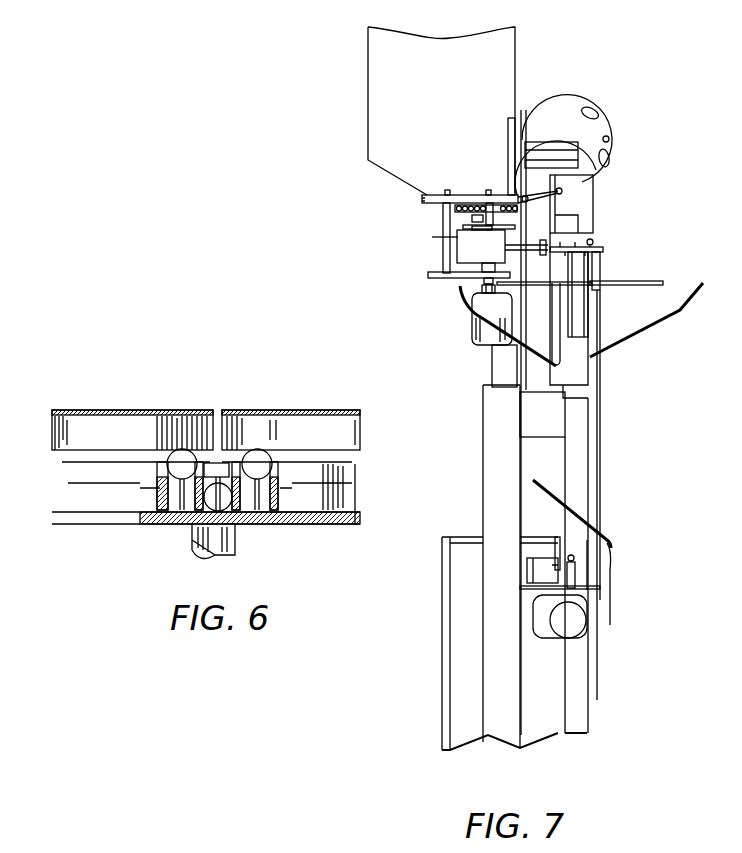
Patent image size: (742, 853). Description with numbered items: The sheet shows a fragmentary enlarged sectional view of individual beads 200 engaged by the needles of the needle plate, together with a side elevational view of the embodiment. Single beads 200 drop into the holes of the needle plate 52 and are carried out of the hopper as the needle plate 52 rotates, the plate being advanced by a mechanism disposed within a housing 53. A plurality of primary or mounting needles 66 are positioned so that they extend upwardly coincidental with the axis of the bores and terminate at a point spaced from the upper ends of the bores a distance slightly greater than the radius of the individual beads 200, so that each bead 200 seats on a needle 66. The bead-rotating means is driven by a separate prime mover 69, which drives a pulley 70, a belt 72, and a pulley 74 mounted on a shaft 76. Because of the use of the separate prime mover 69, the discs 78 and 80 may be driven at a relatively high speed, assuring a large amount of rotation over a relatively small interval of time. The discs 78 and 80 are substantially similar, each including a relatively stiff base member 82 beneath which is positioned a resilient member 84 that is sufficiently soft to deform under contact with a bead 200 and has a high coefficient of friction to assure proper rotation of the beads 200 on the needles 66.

In FIG. 7, the needle plate 52 is at (455, 219).
In FIG. 7, the housing 53 is at (462, 254).
In FIG. 6, the mounting needles 66 is at (177, 503).
In FIG. 7, the prime mover 69 is at (478, 340).
In FIG. 7, the pulley 70 is at (480, 280).
In FIG. 7, the belt 72 is at (447, 275).
In FIG. 7, the pulley 74 is at (427, 275).
In FIG. 7, the shaft 76 is at (446, 268).
In FIG. 7, the disc 78 is at (422, 200).
In FIG. 7, the disc 80 is at (472, 195).
In FIG. 6, the base member 82 is at (103, 411).
In FIG. 6, the resilient member 84 is at (120, 423).
In FIG. 6, the beads 200 is at (180, 453).